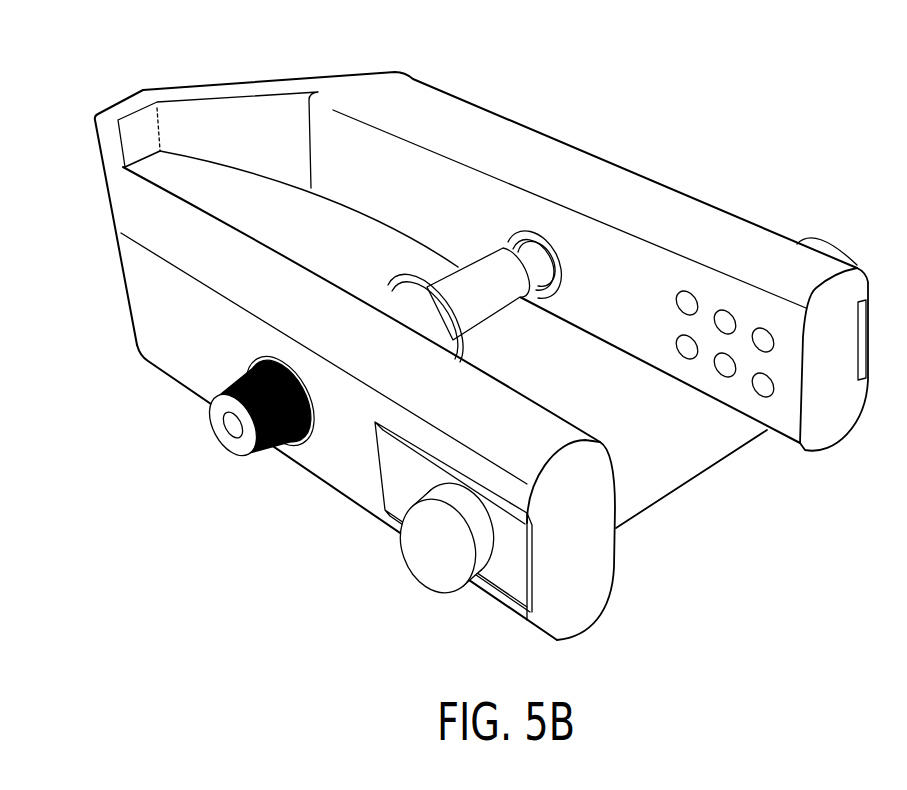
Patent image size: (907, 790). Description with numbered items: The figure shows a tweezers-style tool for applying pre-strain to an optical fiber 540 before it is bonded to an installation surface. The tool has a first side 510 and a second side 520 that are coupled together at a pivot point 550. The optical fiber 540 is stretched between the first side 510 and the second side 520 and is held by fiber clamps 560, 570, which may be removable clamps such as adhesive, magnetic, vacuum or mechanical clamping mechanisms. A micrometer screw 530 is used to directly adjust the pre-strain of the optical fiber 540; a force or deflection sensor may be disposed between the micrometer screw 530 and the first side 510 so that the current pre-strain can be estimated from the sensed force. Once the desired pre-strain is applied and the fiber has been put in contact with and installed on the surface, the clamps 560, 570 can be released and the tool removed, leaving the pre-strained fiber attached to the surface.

The first side 510 is at (267, 270).
The second side 520 is at (695, 213).
The micrometer screw 530 is at (451, 291).
The optical fiber 540 is at (678, 483).
The pivot point 550 is at (102, 120).
The fiber clamp 560 is at (430, 557).
The fiber clamp 570 is at (825, 247).